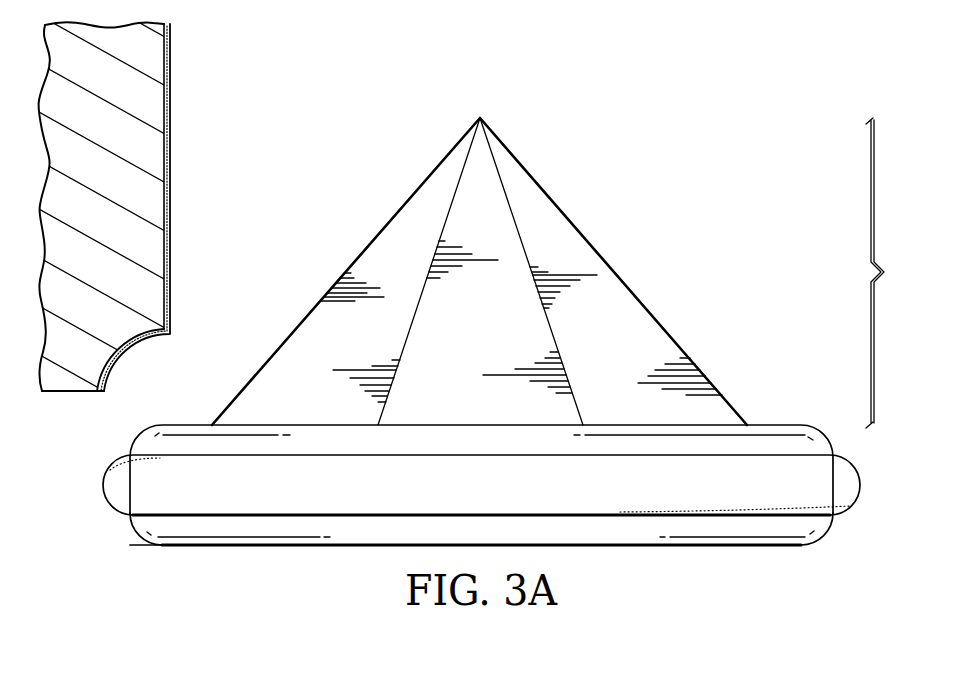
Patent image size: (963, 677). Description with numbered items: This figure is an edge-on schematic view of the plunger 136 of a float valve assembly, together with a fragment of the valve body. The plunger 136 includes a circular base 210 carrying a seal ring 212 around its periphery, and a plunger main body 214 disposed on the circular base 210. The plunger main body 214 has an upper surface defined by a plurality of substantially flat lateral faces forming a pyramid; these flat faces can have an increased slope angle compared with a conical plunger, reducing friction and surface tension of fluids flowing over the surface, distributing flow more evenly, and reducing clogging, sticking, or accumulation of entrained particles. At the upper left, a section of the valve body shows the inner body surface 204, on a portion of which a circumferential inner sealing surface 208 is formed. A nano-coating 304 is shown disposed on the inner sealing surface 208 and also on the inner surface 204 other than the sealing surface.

The inner body surface 204 is at (172, 99).
The nano-coating 304 is at (172, 162).
The circumferential inner sealing surface 208 is at (103, 372).
The plunger 136 is at (658, 162).
The plunger main body 214 is at (898, 273).
The circular base 210 is at (874, 426).
The seal ring 212 is at (104, 496).